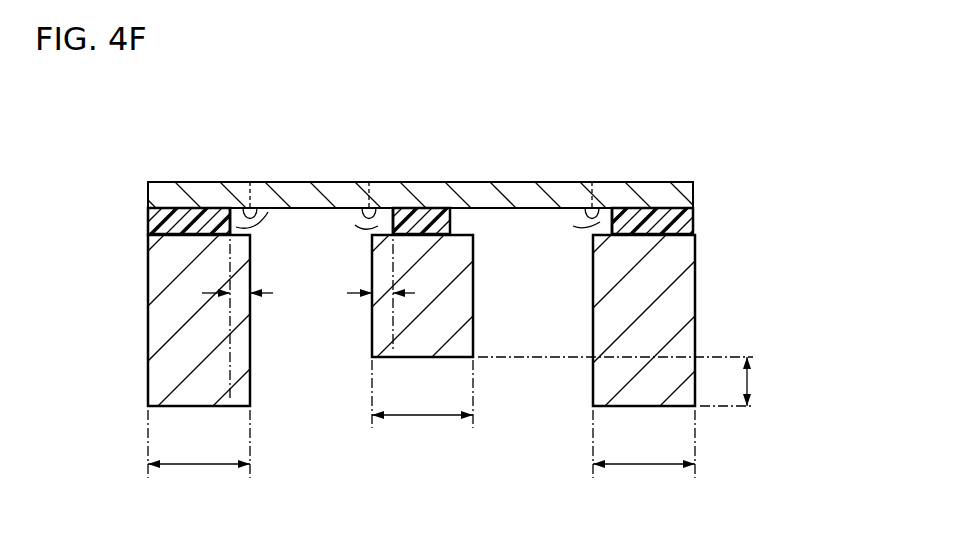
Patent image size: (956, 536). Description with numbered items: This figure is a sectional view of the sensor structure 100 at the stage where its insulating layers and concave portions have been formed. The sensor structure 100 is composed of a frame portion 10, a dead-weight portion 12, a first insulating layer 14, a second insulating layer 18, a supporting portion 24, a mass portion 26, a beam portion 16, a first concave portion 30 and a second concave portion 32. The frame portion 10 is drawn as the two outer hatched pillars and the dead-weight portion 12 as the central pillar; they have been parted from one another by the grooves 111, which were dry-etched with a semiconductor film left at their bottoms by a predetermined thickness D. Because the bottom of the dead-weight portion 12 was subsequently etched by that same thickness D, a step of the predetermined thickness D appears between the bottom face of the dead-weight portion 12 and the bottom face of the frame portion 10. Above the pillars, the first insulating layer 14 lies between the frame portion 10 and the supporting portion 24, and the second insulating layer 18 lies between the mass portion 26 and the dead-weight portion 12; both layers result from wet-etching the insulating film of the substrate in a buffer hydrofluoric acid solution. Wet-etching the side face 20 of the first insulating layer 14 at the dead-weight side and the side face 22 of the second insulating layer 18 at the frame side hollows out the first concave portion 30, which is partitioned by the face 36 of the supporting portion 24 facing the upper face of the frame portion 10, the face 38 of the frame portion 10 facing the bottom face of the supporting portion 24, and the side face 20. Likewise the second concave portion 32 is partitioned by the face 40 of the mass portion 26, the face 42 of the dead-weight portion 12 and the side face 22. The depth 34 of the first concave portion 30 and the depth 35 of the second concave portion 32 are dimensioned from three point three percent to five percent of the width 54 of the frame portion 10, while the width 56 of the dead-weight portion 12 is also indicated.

The sensor structure 100 is at (766, 132).
The frame portion 10 is at (150, 324).
The dead-weight portion 12 is at (456, 288).
The first insulating layer 14 is at (150, 220).
The beam portion 16 is at (292, 196).
The second insulating layer 18 is at (452, 222).
The side face of first insulating layer 20 is at (233, 208).
The side face of second insulating layer 22 is at (384, 212).
The supporting portion 24 is at (422, 164).
The mass portion 26 is at (440, 196).
The first concave portion 30 is at (424, 195).
The second concave portion 32 is at (346, 180).
The depth of first concave portion 34 is at (245, 290).
The depth of second concave portion 35 is at (375, 290).
The face of supporting portion 36 is at (250, 212).
The face of frame portion 38 is at (255, 229).
The face of mass portion 40 is at (367, 212).
The face of dead-weight portion 42 is at (368, 238).
The width of frame portion 54 is at (421, 454).
The width of central pillar 56 is at (422, 404).
The grooves 111 is at (305, 320).
The predetermined thickness D is at (628, 381).